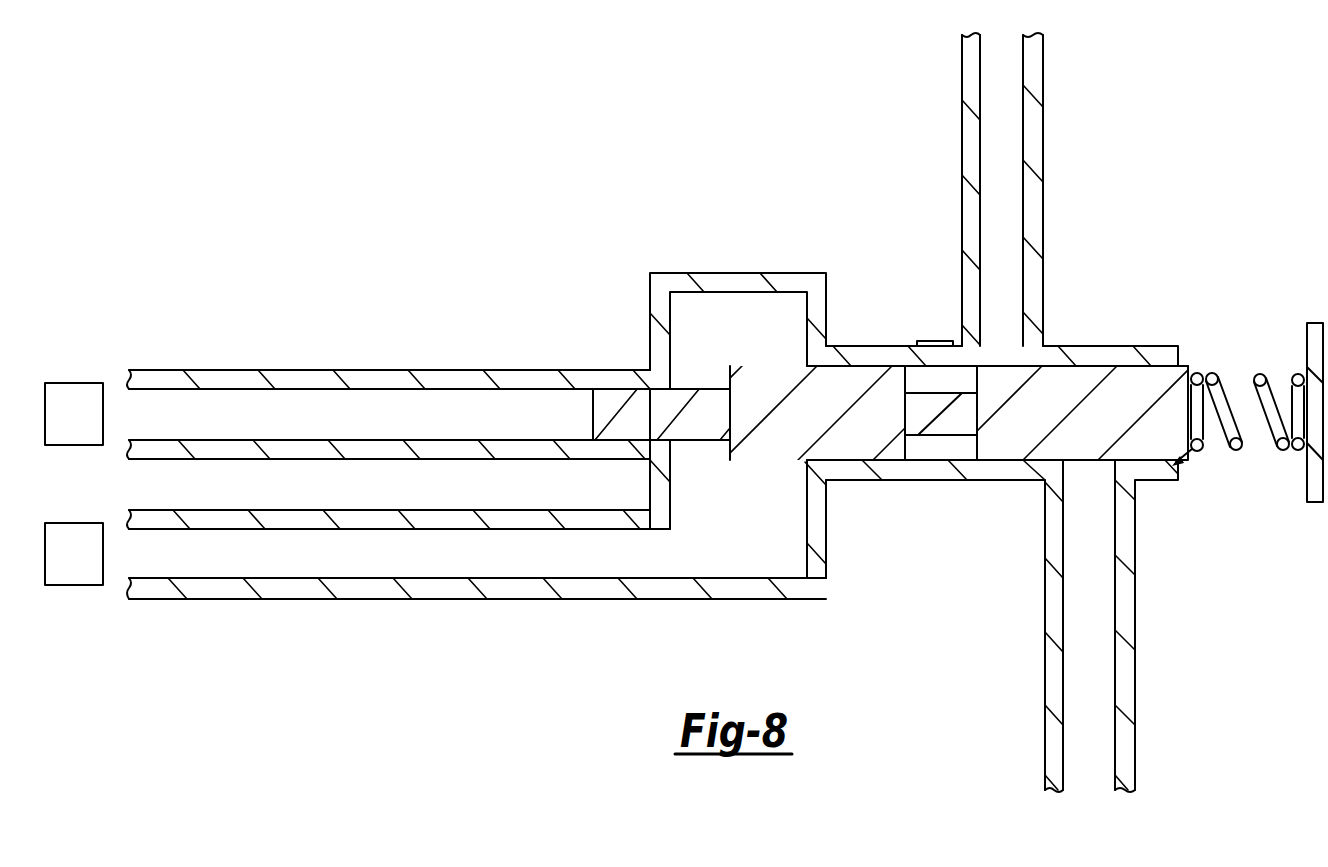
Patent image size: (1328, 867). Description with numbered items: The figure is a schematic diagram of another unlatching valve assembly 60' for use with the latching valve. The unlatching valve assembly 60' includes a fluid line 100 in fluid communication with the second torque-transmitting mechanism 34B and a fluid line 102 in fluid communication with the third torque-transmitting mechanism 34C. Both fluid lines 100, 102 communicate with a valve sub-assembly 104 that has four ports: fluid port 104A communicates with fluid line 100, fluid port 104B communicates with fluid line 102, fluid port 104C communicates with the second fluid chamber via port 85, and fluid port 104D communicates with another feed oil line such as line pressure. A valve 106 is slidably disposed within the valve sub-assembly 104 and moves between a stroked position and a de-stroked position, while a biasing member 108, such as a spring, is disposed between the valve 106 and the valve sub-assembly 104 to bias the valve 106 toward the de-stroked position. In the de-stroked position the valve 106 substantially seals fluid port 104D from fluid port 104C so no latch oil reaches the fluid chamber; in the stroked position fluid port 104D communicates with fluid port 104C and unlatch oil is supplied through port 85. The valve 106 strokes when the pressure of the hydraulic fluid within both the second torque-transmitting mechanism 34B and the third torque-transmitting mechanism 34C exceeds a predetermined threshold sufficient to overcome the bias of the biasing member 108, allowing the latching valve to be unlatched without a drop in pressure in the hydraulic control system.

The second torque-transmitting mechanism 34B is at (147, 415).
The third torque-transmitting mechanism 34C is at (147, 553).
The fluid line 100 is at (255, 390).
The fluid line 102 is at (258, 530).
The valve sub-assembly 104 is at (1202, 354).
The fluid port 104A is at (585, 430).
The fluid port 104B is at (780, 481).
The fluid port 104C is at (1097, 472).
The fluid port 104D is at (1005, 348).
The valve 106 is at (1003, 445).
The biasing member 108 is at (1235, 450).
The port 85 is at (1103, 786).
The unlatching valve assembly 60' is at (1099, 188).